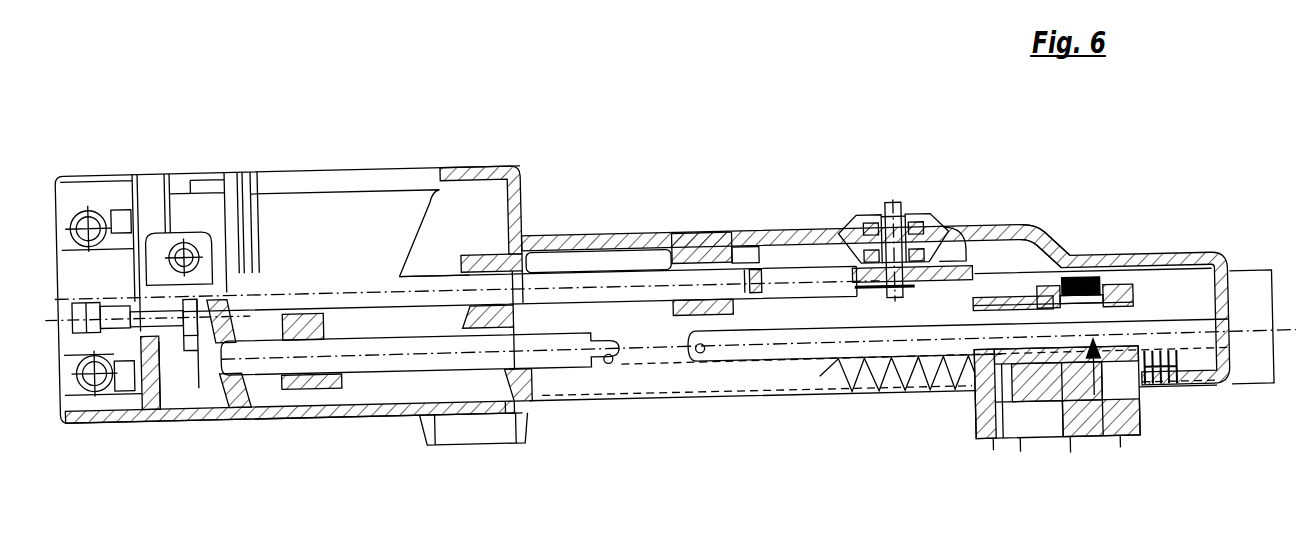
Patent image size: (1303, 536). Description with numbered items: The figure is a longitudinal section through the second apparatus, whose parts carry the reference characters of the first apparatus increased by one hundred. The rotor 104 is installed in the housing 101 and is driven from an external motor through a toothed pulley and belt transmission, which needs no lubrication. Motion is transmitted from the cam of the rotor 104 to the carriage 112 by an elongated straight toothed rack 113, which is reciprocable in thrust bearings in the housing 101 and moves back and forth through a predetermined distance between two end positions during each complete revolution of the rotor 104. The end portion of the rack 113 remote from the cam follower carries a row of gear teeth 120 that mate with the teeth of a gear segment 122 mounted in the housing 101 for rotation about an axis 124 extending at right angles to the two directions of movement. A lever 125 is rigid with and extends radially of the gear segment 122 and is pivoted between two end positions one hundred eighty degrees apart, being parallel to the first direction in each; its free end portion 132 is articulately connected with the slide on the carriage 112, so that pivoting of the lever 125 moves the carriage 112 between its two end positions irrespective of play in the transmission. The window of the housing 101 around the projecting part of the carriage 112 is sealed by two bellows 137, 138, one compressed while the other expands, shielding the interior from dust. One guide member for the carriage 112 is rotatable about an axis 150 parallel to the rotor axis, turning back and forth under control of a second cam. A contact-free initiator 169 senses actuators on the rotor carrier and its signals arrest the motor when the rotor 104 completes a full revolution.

The housing 101 is at (1133, 266).
The rotor 104 is at (330, 225).
The carriage 112 is at (975, 425).
The toothed rack 113 is at (727, 277).
The gear teeth 120 is at (753, 270).
The gear segment 122 is at (857, 266).
The axis 124 is at (893, 250).
The lever 125 is at (967, 264).
The free end portion 132 is at (1050, 258).
The bellows 137 is at (870, 392).
The bellows 138 is at (1157, 399).
The axis 150 is at (567, 362).
The initiator 169 is at (133, 409).